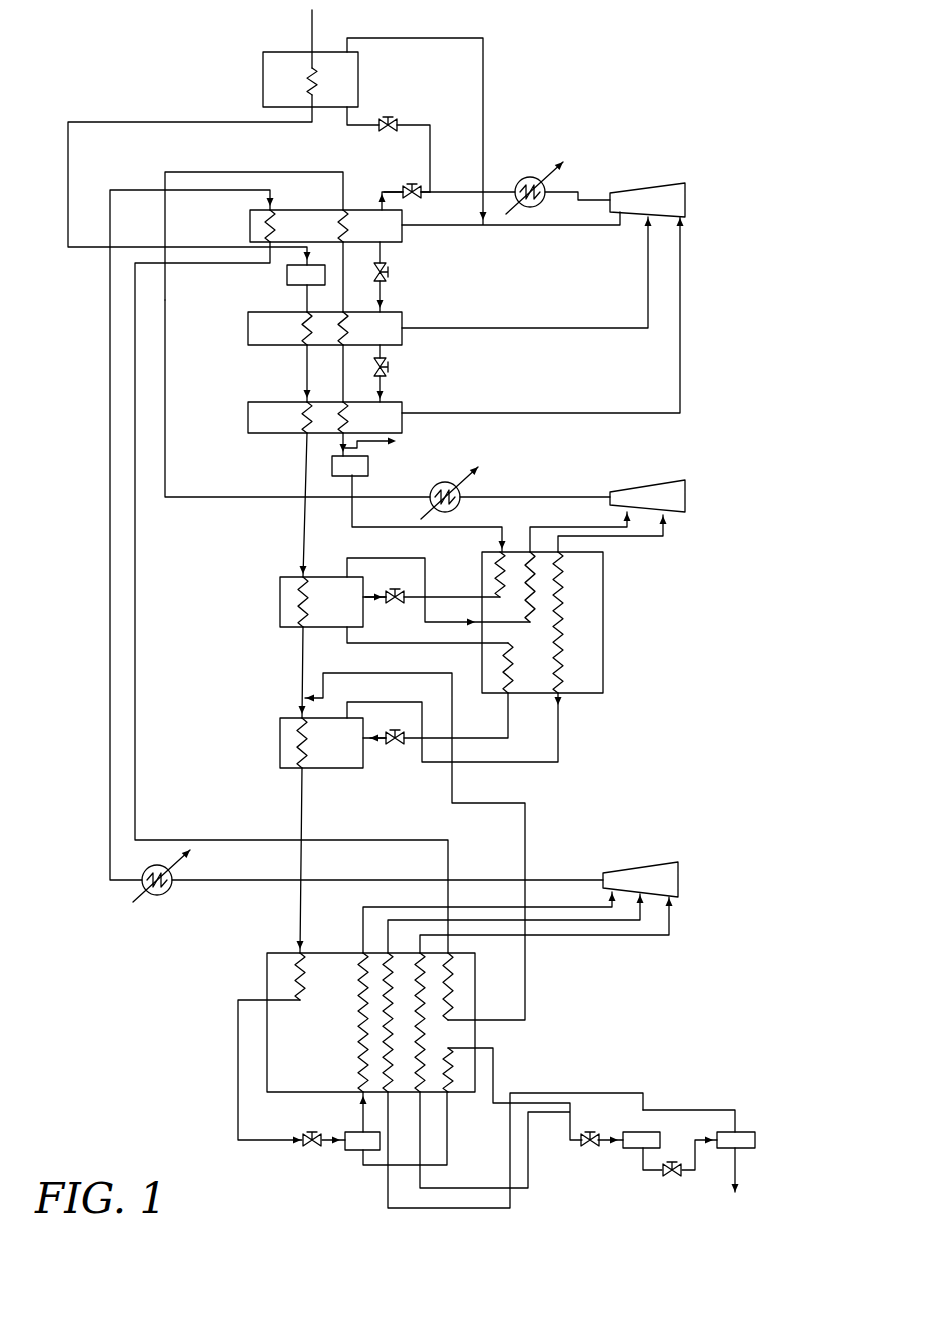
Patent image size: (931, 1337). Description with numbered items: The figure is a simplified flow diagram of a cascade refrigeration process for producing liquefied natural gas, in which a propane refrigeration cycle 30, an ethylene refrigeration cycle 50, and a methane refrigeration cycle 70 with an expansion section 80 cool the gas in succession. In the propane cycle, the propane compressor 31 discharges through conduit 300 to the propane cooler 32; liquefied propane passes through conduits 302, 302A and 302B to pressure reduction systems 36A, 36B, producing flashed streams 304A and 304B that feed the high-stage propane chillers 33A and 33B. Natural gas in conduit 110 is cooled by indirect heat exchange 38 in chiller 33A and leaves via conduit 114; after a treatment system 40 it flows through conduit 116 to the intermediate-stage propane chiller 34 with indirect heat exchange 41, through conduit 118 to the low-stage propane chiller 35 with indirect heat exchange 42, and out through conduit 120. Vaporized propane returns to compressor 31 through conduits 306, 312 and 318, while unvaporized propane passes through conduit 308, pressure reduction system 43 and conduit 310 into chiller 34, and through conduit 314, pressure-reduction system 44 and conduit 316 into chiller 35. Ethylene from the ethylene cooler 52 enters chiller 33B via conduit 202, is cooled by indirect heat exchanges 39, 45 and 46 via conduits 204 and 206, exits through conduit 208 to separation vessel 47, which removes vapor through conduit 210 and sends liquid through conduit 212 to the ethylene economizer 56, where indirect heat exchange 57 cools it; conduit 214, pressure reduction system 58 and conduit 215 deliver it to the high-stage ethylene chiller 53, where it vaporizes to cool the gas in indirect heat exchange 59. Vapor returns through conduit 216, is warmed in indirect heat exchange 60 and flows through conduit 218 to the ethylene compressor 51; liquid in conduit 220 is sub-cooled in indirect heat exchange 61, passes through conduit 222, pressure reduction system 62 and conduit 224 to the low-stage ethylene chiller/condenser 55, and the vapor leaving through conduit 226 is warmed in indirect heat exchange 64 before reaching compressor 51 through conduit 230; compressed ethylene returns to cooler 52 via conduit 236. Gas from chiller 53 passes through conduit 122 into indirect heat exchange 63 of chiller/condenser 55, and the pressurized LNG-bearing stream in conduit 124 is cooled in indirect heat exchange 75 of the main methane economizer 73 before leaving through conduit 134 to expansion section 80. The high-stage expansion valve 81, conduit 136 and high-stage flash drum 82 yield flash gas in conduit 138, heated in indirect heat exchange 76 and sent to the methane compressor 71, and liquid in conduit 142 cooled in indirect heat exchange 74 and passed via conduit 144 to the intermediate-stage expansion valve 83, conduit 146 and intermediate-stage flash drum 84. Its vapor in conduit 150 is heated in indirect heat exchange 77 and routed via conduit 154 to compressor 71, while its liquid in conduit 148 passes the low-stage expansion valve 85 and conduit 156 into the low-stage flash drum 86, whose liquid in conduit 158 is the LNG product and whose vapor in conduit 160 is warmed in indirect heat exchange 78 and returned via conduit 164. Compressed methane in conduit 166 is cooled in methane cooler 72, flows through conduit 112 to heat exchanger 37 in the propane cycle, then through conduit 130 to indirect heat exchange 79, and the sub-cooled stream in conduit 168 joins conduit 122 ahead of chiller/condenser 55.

The propane refrigeration cycle 30 is at (708, 203).
The propane compressor 31 is at (640, 190).
The propane cooler 32 is at (523, 182).
The high-stage propane chiller 33A is at (359, 70).
The high-stage propane chiller 33B is at (252, 220).
The intermediate-stage propane chiller 34 is at (248, 318).
The low-stage propane chiller 35 is at (248, 410).
The pressure reduction system 36A is at (392, 118).
The pressure reduction system 36B is at (415, 200).
The heat exchanger 37 is at (276, 222).
The indirect heat exchange 38 is at (314, 80).
The indirect heat exchange 39 is at (348, 226).
The treatment system 40 is at (326, 277).
The indirect heat exchange 41 is at (303, 330).
The indirect heat exchange means 42 is at (303, 420).
The pressure reduction system 43 is at (392, 272).
The pressure-reduction system 44 is at (392, 367).
The indirect heat exchange 45 is at (348, 328).
The indirect heat exchange 46 is at (348, 418).
The separation vessel 47 is at (369, 470).
The ethylene refrigeration cycle 50 is at (722, 500).
The ethylene compressor 51 is at (637, 486).
The ethylene cooler 52 is at (447, 483).
The high-stage ethylene chiller 53 is at (280, 600).
The low-stage ethylene chiller/condenser 55 is at (280, 748).
The ethylene economizer 56 is at (605, 668).
The indirect heat exchange 57 is at (497, 577).
The pressure reduction system 58 is at (400, 605).
The indirect heat exchange 59 is at (308, 600).
The indirect heat exchange 60 is at (528, 605).
The indirect heat exchange 61 is at (512, 662).
The pressure reduction system 62 is at (400, 747).
The indirect heat exchange 63 is at (308, 745).
The indirect heat exchange 64 is at (562, 632).
The methane refrigeration cycle 70 is at (712, 880).
The methane compressor 71 is at (630, 868).
The methane cooler 72 is at (150, 867).
The main methane economizer 73 is at (267, 958).
The indirect heat exchange 74 is at (455, 1053).
The indirect heat exchange 75 is at (307, 970).
The indirect heat exchange means 76 is at (358, 1017).
The indirect heat exchange 77 is at (385, 1058).
The indirect heat exchange 78 is at (423, 1030).
The indirect heat exchange 79 is at (455, 1010).
The expansion section 80 is at (605, 1075).
The high-stage methane expansion valve 81 is at (305, 1147).
The high-stage methane flash drum 82 is at (355, 1152).
The intermediate-stage methane expansion valve 83 is at (587, 1148).
The intermediate-stage methane flash drum 84 is at (661, 1145).
The low-stage methane expansion valve 85 is at (672, 1178).
The low-stage methane flash drum 86 is at (742, 1131).
The conduit 110 is at (313, 32).
The conduit 112 is at (145, 188).
The conduit 114 is at (118, 121).
The conduit 116 is at (288, 286).
The conduit 118 is at (304, 383).
The conduit 120 is at (304, 468).
The conduit 122 is at (300, 636).
The conduit 124 is at (298, 796).
The conduit 130 is at (160, 257).
The conduit 134 is at (237, 1125).
The conduit 136 is at (330, 1140).
The conduit 138 is at (360, 913).
The conduit 142 is at (449, 1135).
The conduit 144 is at (504, 1108).
The conduit 146 is at (606, 1143).
The conduit 148 is at (640, 1172).
The conduit 150 is at (550, 1092).
The conduit 154 is at (547, 923).
The conduit 156 is at (690, 1175).
The conduit 158 is at (742, 1170).
The conduit 160 is at (658, 1108).
The conduit 164 is at (605, 937).
The conduit 166 is at (468, 878).
The conduit 168 is at (470, 803).
The conduit 202 is at (288, 498).
The conduit 204 is at (344, 283).
The conduit 206 is at (343, 357).
The conduit 208 is at (340, 440).
The conduit 210 is at (398, 441).
The conduit 212 is at (372, 527).
The conduit 214 is at (458, 600).
The conduit 215 is at (380, 596).
The conduit 216 is at (428, 565).
The conduit 218 is at (529, 526).
The conduit 220 is at (463, 645).
The conduit 222 is at (507, 700).
The conduit 224 is at (383, 737).
The conduit 226 is at (560, 722).
The conduit 230 is at (658, 538).
The conduit 236 is at (478, 494).
The conduit 300 is at (559, 194).
The conduit 302 is at (478, 188).
The conduit 302A is at (432, 140).
The conduit 302B is at (421, 183).
The conduit 304A is at (349, 127).
The stream 304B is at (392, 186).
The conduit 306 is at (520, 226).
The conduit 308 is at (383, 252).
The conduit 310 is at (385, 293).
The conduit 312 is at (485, 327).
The conduit 314 is at (385, 355).
The conduit 316 is at (385, 385).
The conduit 318 is at (473, 413).